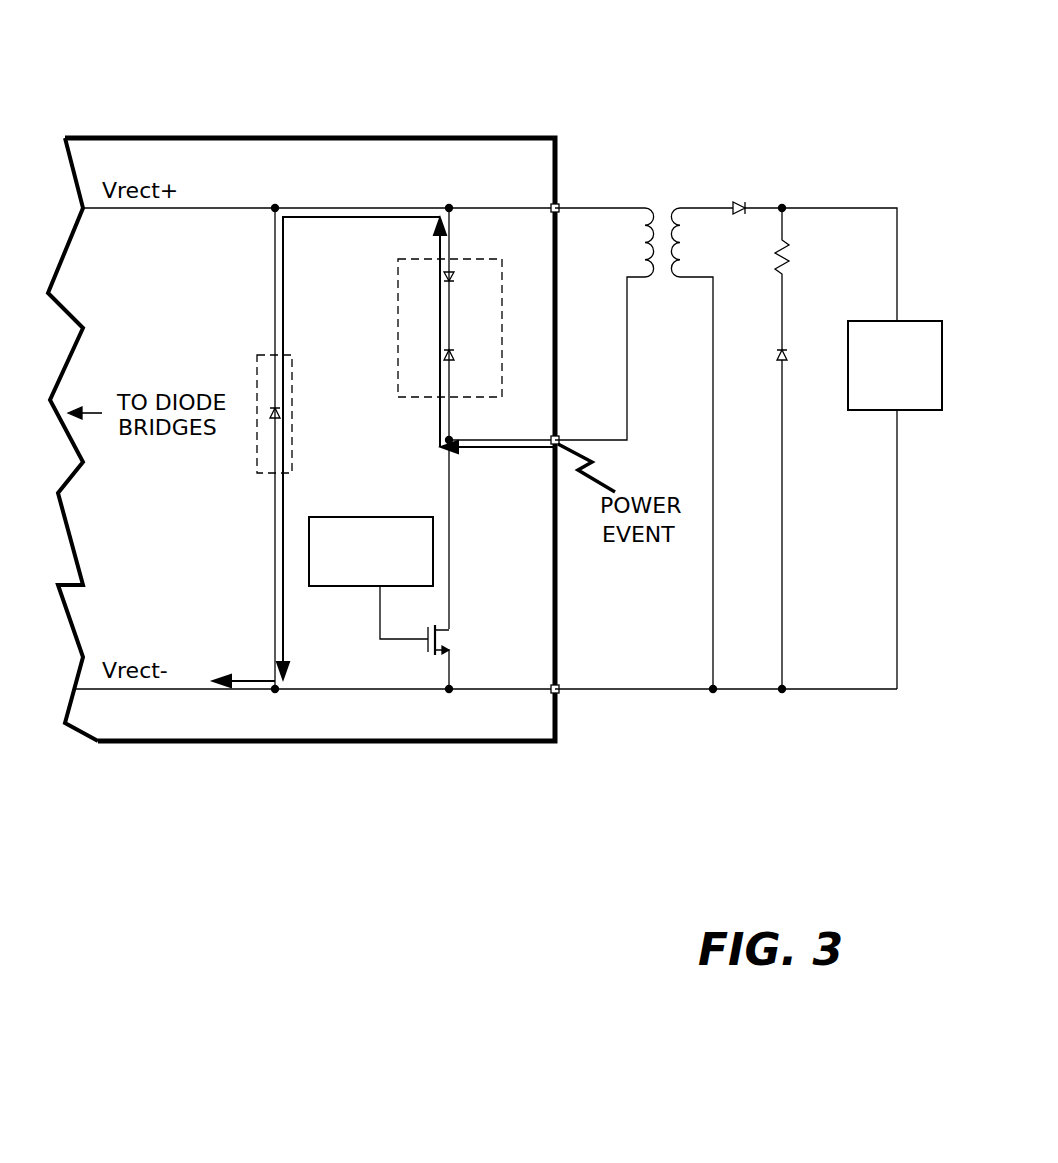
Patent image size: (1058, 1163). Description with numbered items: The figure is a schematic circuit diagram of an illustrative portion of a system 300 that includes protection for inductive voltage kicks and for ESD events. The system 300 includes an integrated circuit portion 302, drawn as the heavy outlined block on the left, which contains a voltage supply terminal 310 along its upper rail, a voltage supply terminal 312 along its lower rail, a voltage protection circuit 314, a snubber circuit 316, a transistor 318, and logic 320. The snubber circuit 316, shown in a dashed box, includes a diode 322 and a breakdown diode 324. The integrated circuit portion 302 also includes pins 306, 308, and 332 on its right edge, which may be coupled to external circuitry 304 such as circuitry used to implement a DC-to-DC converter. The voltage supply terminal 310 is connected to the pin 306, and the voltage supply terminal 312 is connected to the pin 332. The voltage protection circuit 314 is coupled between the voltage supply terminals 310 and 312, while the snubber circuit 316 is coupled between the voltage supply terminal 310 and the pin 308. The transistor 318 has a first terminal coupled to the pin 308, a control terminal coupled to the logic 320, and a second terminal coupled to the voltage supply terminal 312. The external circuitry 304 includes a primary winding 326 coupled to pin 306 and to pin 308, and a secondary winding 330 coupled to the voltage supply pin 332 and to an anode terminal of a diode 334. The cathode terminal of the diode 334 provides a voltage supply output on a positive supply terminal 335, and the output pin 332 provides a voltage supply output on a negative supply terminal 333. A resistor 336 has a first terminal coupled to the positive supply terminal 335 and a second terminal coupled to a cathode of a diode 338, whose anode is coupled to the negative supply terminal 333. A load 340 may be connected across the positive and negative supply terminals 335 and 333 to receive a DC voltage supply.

The system 300 is at (240, 70).
The integrated circuit portion 302 is at (311, 138).
The external circuitry 304 is at (695, 108).
The pin 306 is at (560, 207).
The pin 308 is at (562, 439).
The voltage supply terminal 310 is at (240, 208).
The voltage supply terminal 312 is at (318, 688).
The voltage protection circuit 314 is at (293, 405).
The snubber circuit 316 is at (436, 418).
The transistor 318 is at (458, 641).
The logic 320 is at (362, 588).
The diode 322 is at (456, 355).
The breakdown diode 324 is at (458, 281).
The primary winding 326 is at (645, 246).
The secondary winding 330 is at (680, 246).
The pin 332 is at (562, 689).
The negative supply terminal 333 is at (735, 692).
The diode 334 is at (740, 203).
The positive supply terminal 335 is at (878, 206).
The resistor 336 is at (790, 263).
The diode 338 is at (787, 360).
The load 340 is at (866, 411).